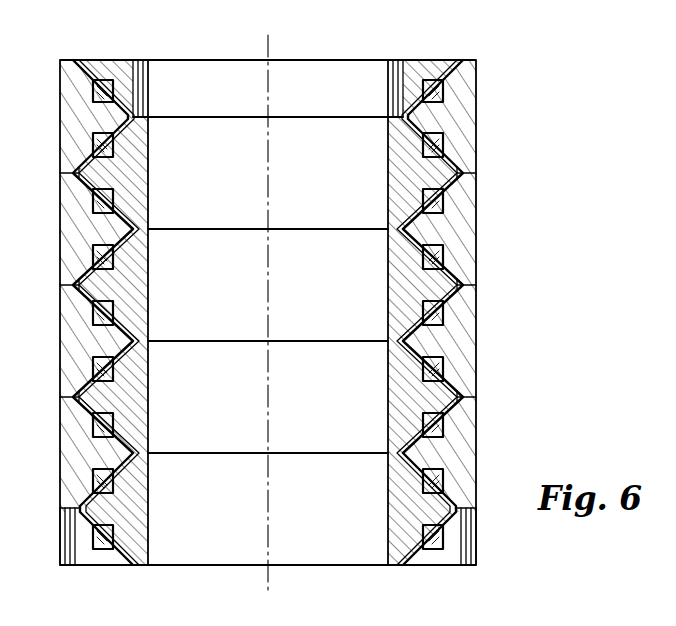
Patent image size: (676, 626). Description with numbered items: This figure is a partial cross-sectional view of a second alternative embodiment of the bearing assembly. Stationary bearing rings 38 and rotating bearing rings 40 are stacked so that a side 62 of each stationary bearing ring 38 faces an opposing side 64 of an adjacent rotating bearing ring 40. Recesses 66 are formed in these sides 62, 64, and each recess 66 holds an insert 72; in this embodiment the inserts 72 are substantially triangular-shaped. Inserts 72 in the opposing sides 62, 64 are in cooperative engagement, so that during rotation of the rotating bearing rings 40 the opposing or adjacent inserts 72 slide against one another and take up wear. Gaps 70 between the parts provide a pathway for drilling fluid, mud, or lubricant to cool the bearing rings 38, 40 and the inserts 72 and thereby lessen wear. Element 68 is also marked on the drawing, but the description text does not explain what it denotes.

The stationary bearing ring 38 is at (85, 450).
The rotating bearing ring 40 is at (92, 382).
The side of stationary bearing ring 62 is at (80, 67).
The side of rotating bearing ring 64 is at (83, 158).
The recess 66 is at (95, 96).
The end fitting 68 is at (443, 622).
The gap 70 is at (130, 127).
The insert 72 is at (97, 100).